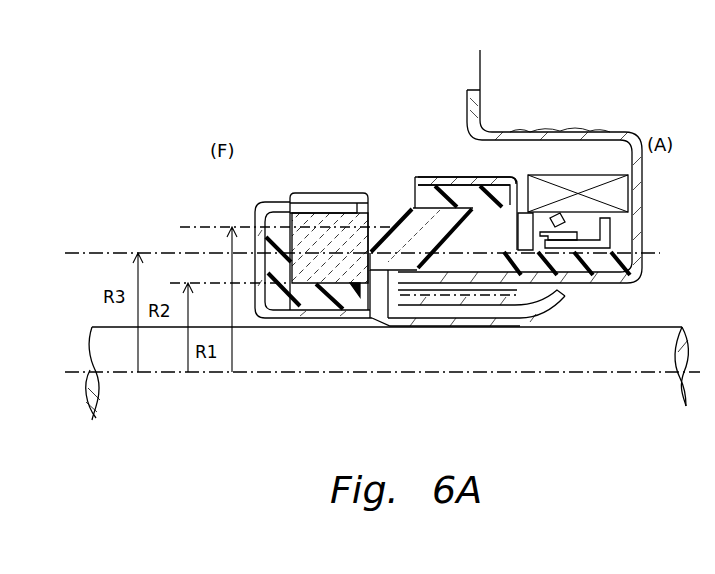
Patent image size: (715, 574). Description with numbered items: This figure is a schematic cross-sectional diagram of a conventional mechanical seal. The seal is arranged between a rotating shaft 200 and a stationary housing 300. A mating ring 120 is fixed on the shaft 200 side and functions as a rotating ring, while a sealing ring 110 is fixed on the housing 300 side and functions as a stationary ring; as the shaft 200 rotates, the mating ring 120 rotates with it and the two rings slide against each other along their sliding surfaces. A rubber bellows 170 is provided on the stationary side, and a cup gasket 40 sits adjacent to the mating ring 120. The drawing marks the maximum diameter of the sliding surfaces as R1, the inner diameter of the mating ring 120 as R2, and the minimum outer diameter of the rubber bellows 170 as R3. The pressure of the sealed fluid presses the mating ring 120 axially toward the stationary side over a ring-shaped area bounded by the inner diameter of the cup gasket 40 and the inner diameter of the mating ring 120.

The cup gasket 40 is at (284, 207).
The mating ring 120 is at (352, 210).
The sealing ring 110 is at (452, 225).
The rubber bellows 170 is at (467, 200).
The housing 300 is at (520, 166).
The shaft 200 is at (387, 373).